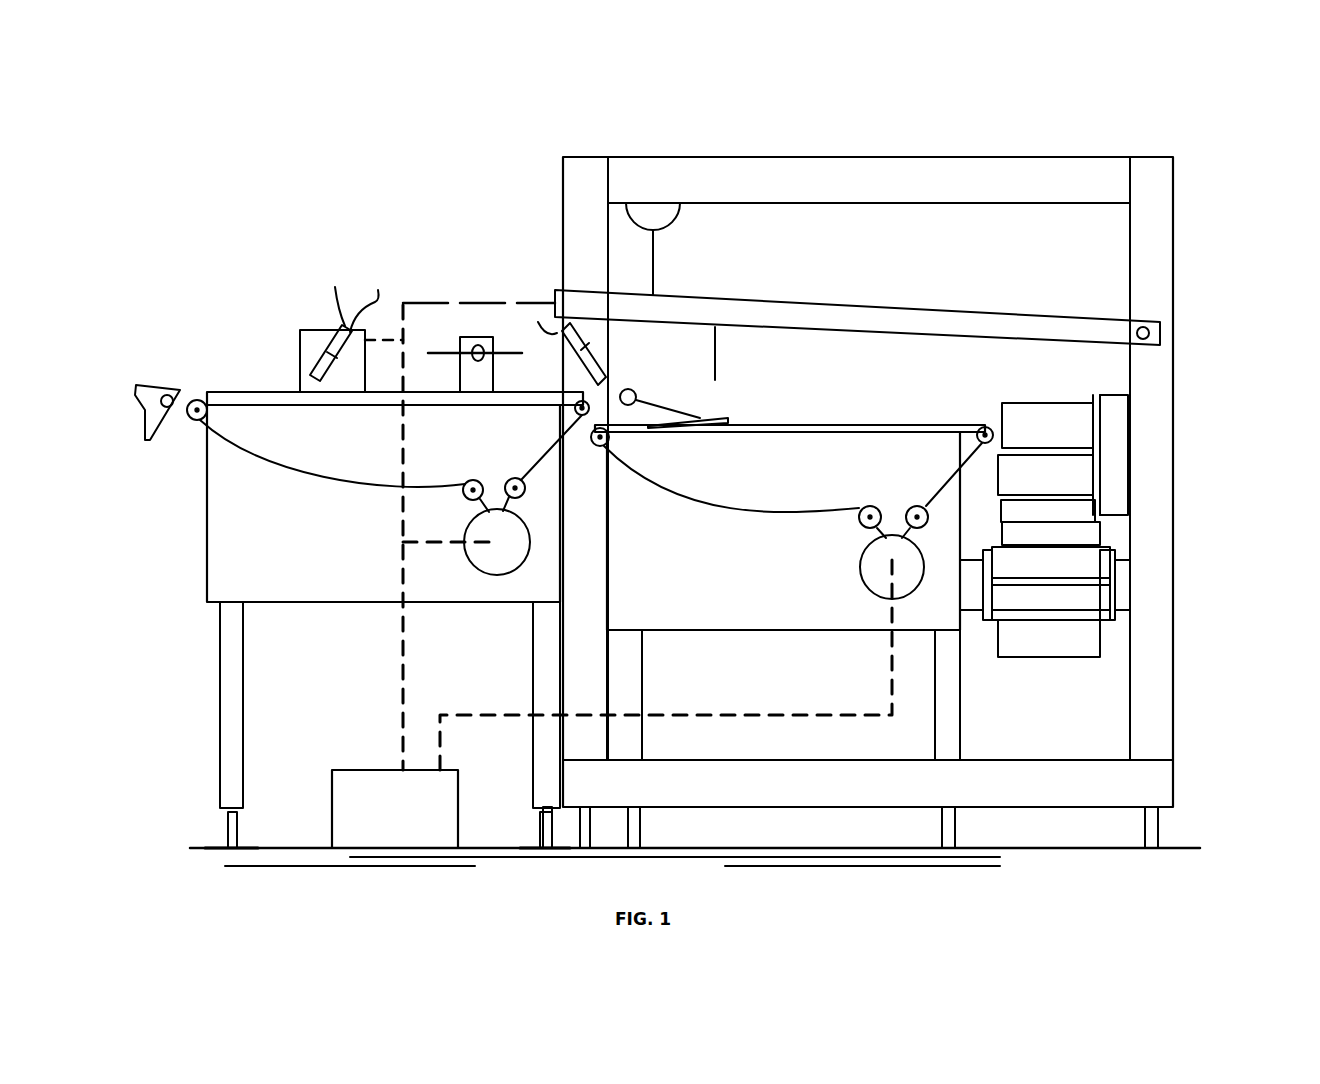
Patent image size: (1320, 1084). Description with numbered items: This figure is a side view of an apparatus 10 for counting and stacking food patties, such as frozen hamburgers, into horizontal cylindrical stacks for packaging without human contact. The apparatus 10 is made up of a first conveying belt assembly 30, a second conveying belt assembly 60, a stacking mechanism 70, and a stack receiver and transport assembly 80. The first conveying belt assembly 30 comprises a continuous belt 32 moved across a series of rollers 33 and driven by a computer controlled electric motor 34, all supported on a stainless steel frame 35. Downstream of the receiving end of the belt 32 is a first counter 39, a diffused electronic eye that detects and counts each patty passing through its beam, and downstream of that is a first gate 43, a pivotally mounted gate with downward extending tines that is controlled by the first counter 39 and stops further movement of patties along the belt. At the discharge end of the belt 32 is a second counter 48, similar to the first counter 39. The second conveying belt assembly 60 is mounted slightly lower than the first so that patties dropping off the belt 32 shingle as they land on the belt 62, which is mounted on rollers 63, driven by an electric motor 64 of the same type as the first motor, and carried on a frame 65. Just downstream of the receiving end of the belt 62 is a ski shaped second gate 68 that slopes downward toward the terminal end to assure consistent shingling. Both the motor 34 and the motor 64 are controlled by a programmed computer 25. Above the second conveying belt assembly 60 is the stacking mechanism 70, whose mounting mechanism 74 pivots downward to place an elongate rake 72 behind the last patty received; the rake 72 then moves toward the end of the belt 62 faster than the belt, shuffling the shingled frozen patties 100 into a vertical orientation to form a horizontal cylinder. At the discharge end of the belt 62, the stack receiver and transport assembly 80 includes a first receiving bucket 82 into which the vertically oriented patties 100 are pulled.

The apparatus 10 is at (486, 94).
The programmed computer 25 is at (409, 827).
The first conveying belt assembly 30 is at (244, 310).
The belt 32 is at (310, 478).
The rollers 33 is at (208, 416).
The electric motor 34 is at (485, 560).
The frame 35 is at (228, 555).
The first counter 39 is at (339, 326).
The first gate 43 is at (446, 322).
The second counter 48 is at (590, 343).
The second conveying belt assembly 60 is at (856, 401).
The belt 62 is at (718, 503).
The rollers 63 is at (612, 445).
The electric motor 64 is at (882, 596).
The frame 65 is at (640, 600).
The second gate 68 is at (695, 408).
The stacking mechanism 70 is at (952, 150).
The rake 72 is at (716, 357).
The mounting mechanism 74 is at (840, 316).
The stack receiver and transport assembly 80 is at (1192, 457).
The first receiving bucket 82 is at (1075, 428).
The frozen patties 100 is at (732, 420).